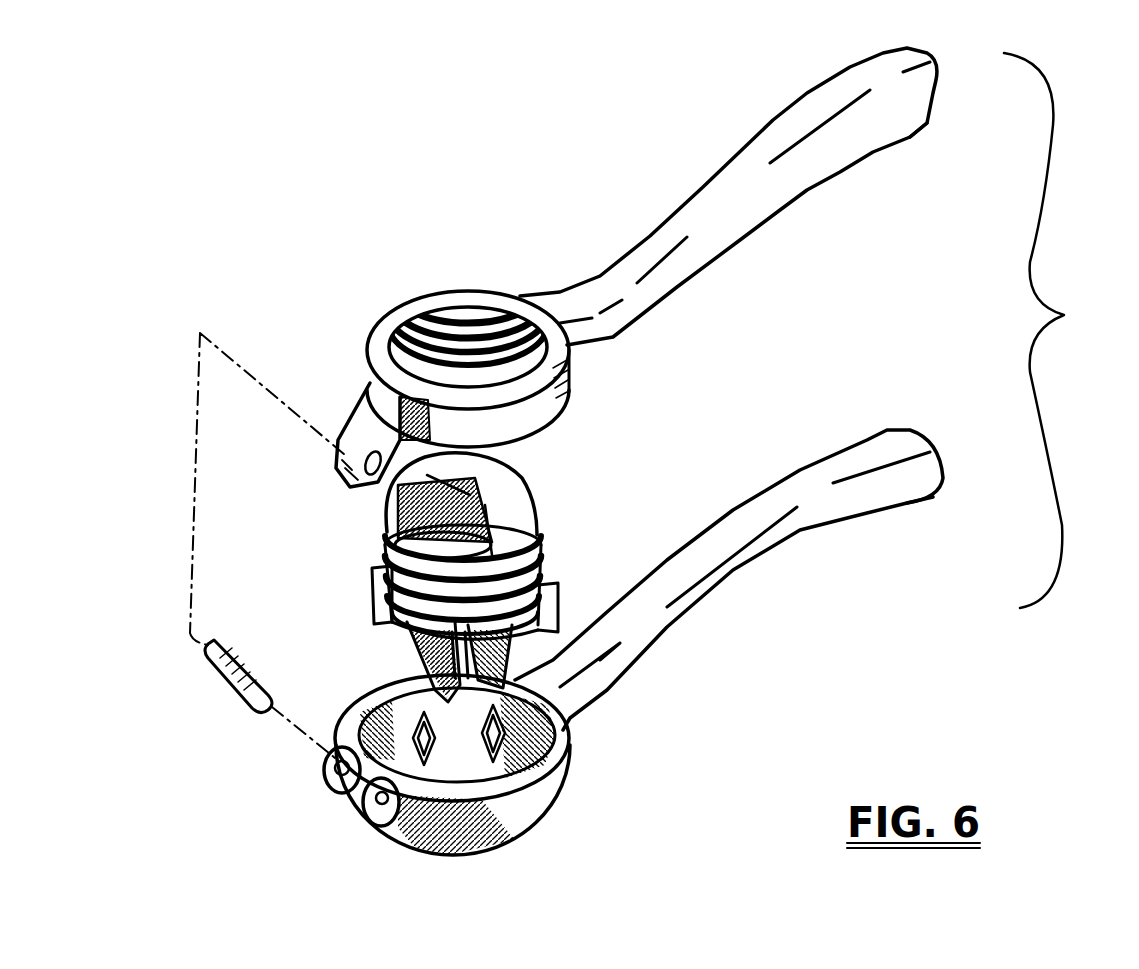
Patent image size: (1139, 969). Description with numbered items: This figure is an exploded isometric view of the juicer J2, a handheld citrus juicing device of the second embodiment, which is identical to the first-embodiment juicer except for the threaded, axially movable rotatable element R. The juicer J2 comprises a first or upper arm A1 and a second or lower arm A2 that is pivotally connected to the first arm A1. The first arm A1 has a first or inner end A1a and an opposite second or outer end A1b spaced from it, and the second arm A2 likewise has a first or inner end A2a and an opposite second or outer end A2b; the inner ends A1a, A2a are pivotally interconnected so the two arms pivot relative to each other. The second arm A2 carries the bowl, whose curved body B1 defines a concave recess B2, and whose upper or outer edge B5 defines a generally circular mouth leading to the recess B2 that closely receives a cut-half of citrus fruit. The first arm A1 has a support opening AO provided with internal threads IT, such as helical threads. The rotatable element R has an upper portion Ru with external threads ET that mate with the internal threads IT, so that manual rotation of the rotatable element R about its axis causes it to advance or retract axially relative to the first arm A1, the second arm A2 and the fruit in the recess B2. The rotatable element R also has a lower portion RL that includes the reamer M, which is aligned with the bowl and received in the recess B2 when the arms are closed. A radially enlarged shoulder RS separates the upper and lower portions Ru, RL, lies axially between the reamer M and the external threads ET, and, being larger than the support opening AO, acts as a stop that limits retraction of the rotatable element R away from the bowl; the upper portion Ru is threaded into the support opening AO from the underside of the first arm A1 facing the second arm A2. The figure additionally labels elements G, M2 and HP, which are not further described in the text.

The first arm A1 is at (703, 190).
The first end of first arm A1a is at (365, 405).
The second end of first arm A1b is at (905, 135).
The internal threads IT is at (447, 297).
The support opening AO is at (487, 283).
The guide cap G is at (490, 470).
The rotatable element R is at (550, 545).
The external threads ET is at (540, 568).
The upper portion Ru is at (393, 543).
The shoulder RS is at (383, 578).
The lower portion RL is at (383, 650).
The reamer M is at (537, 650).
The collar slots M2 is at (452, 708).
The hinge pin HP is at (247, 665).
The recess B2 is at (400, 718).
The upper edge of bowl body B5 is at (553, 752).
The bowl body B1 is at (517, 827).
The second arm A2 is at (810, 477).
The first end of second arm A2a is at (390, 820).
The second end of second arm A2b is at (908, 483).
The juicer J2 is at (1053, 330).